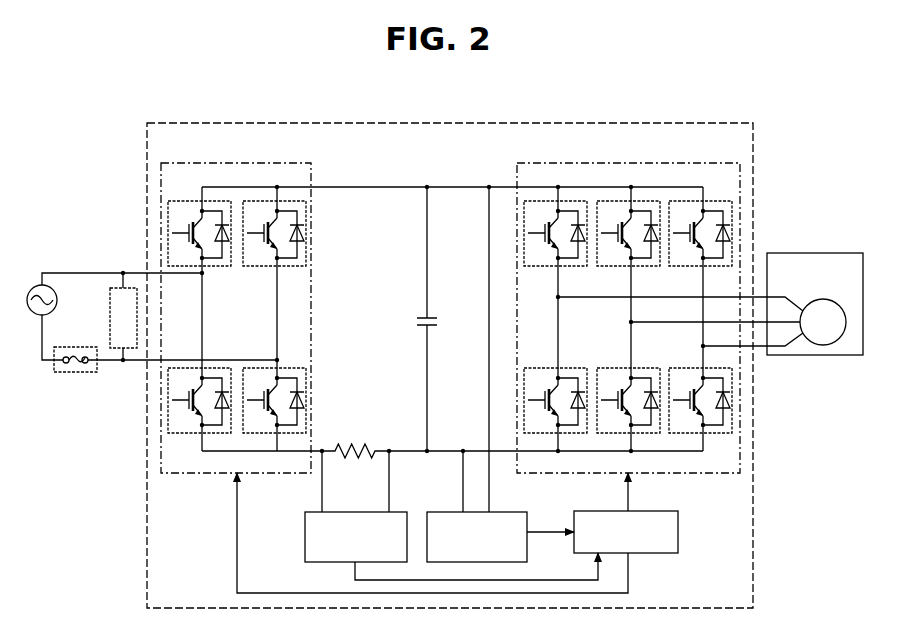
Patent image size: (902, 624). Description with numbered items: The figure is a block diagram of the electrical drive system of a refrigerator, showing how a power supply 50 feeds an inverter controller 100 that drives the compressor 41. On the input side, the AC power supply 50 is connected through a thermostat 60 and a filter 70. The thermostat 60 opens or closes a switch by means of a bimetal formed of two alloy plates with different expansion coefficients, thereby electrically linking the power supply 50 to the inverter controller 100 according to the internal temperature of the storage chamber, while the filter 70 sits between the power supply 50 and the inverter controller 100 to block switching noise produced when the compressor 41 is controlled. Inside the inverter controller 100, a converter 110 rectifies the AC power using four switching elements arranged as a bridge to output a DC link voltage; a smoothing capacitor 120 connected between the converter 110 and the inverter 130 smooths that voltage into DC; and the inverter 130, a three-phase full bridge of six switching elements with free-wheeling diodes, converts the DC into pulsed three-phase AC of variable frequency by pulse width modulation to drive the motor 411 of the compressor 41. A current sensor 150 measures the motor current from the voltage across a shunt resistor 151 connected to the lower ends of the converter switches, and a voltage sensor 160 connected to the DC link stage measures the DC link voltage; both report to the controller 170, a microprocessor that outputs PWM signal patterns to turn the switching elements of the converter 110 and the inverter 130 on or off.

The inverter controller 100 is at (693, 123).
The converter 110 is at (238, 163).
The smoothing capacitor 120 is at (428, 318).
The inverter 130 is at (630, 163).
The current sensor 150 is at (340, 512).
The shunt resistor 151 is at (361, 444).
The voltage sensor 160 is at (447, 512).
The controller 170 is at (667, 511).
The compressor 41 is at (815, 302).
The motor 411 is at (821, 340).
The power supply 50 is at (34, 288).
The thermostat 60 is at (76, 372).
The filter 70 is at (111, 292).